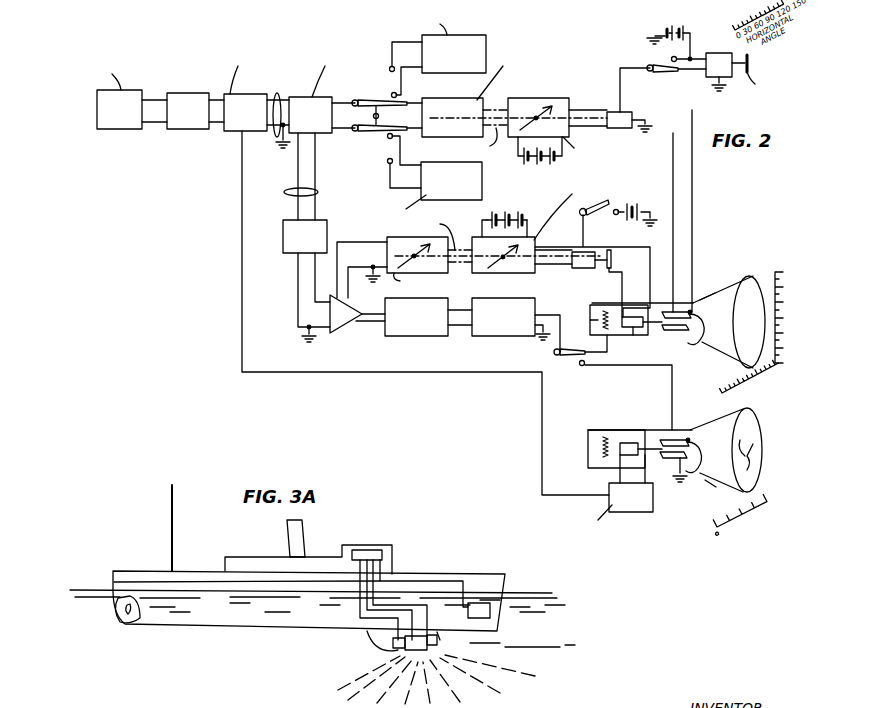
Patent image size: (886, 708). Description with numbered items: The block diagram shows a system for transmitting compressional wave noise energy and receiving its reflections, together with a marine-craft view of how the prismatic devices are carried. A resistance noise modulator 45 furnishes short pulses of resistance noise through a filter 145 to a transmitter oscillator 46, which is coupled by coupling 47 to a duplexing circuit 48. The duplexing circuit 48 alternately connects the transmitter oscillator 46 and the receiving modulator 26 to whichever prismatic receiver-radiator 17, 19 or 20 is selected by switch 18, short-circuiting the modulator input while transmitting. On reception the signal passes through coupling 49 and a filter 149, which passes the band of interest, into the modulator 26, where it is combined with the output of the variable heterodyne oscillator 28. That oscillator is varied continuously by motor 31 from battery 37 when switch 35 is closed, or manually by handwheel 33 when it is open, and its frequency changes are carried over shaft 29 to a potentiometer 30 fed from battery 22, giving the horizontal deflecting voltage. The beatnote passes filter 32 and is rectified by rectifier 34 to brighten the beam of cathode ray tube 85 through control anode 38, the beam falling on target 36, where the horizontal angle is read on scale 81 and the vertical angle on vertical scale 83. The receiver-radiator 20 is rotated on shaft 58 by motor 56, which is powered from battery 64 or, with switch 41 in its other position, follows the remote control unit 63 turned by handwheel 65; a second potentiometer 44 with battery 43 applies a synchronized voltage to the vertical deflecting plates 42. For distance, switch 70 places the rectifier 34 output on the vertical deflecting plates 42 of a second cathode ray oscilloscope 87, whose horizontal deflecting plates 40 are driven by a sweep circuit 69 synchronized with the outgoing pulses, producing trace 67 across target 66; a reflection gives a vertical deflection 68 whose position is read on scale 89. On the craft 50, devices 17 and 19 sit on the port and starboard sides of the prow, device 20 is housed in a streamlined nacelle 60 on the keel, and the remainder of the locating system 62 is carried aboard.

In FIG. 2, the resistance noise modulator 45 is at (133, 90).
In FIG. 2, the filter 145 is at (203, 129).
In FIG. 2, the transmitter oscillator 46 is at (262, 94).
In FIG. 2, the coupling coil 47 is at (276, 140).
In FIG. 2, the duplexing circuit 48 is at (322, 133).
In FIG. 2, the coupling loop 49 is at (285, 193).
In FIG. 2, the filter 149 is at (283, 231).
In FIG. 2, the switch 18 is at (378, 100).
In FIG. 2, the compressional wave prismatic receiver-radiator 17 is at (480, 35).
In FIG. 2, the prismatic receiver-radiator 20 is at (437, 98).
In FIG. 3A, the prismatic receiver-radiator 20 is at (416, 651).
In FIG. 2, the prismatic receiver-radiator 19 is at (437, 162).
In FIG. 3A, the prismatic receiver-radiator 19 is at (490, 612).
In FIG. 2, the shaft 58 is at (500, 110).
In FIG. 3A, the shaft 58 is at (438, 643).
In FIG. 2, the second potentiometer 44 is at (563, 98).
In FIG. 3A, the second potentiometer 44 is at (438, 636).
In FIG. 2, the battery 43 is at (528, 163).
In FIG. 2, the motor 56 is at (620, 112).
In FIG. 3A, the motor 56 is at (395, 646).
In FIG. 2, the switch 41 is at (660, 72).
In FIG. 2, the remote control unit 63 is at (718, 53).
In FIG. 2, the battery 64 is at (676, 26).
In FIG. 2, the handwheel 65 is at (750, 76).
In FIG. 2, the battery 22 is at (516, 212).
In FIG. 2, the shaft 29 is at (462, 252).
In FIG. 2, the variable heterodyne oscillator 28 is at (392, 238).
In FIG. 2, the potentiometer 30 is at (500, 273).
In FIG. 2, the motor 31 is at (578, 268).
In FIG. 2, the handwheel 33 is at (610, 272).
In FIG. 2, the switch 35 is at (590, 215).
In FIG. 2, the battery 37 is at (638, 204).
In FIG. 2, the modulator 26 is at (340, 326).
In FIG. 2, the filter 32 is at (398, 336).
In FIG. 2, the rectifier 34 is at (488, 336).
In FIG. 2, the switch 70 is at (558, 356).
In FIG. 2, the control anode 38 is at (600, 312).
In FIG. 2, the horizontal deflecting plates 40 is at (635, 327).
In FIG. 2, the vertical deflecting plates 42 is at (698, 340).
In FIG. 2, the target 36 is at (755, 276).
In FIG. 2, the cathode ray tube 85 is at (722, 297).
In FIG. 2, the vertical scale 83 is at (776, 272).
In FIG. 2, the scale 81 is at (736, 378).
In FIG. 2, the target 66 is at (760, 420).
In FIG. 2, the trace 67 is at (747, 438).
In FIG. 2, the vertical deflection 68 is at (749, 465).
In FIG. 2, the second cathode ray oscilloscope 87 is at (718, 488).
In FIG. 2, the scale 89 is at (773, 498).
In FIG. 2, the sweep circuit 69 is at (630, 512).
In FIG. 3A, the ship 50 is at (488, 574).
In FIG. 3A, the locating system 62 is at (370, 550).
In FIG. 3A, the streamlined nacelle 60 is at (376, 644).